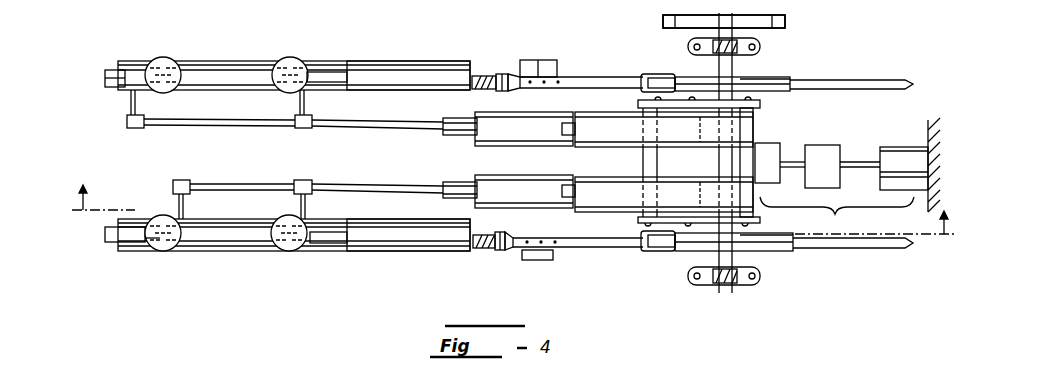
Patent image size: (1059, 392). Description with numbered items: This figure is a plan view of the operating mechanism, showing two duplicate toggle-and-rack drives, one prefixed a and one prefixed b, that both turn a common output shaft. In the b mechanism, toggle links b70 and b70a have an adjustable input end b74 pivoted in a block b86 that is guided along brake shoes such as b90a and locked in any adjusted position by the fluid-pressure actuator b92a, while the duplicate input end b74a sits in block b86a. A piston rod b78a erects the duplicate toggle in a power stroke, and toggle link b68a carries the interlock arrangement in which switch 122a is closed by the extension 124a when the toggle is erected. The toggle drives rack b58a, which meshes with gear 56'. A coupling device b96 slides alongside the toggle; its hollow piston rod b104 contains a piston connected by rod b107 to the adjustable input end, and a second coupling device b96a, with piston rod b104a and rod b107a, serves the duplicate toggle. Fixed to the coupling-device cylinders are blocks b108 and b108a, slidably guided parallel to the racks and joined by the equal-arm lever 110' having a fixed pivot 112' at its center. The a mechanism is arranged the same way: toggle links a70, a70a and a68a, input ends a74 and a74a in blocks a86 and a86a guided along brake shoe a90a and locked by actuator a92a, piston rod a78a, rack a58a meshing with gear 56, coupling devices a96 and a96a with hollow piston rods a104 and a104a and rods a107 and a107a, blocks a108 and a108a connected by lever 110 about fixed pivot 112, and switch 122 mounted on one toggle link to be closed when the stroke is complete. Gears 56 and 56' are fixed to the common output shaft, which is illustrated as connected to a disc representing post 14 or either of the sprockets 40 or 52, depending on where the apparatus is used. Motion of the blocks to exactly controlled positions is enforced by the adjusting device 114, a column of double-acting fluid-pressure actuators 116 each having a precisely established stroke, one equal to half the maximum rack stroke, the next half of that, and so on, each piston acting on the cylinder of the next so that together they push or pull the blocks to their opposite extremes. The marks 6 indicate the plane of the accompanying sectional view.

The toggle link b70 is at (222, 93).
The brake shoe b90a is at (109, 72).
The block b86 is at (112, 88).
The fluid-pressure actuator b92a is at (287, 57).
The block b86a is at (305, 60).
The toggle link b70a is at (451, 62).
The input end of toggle b74 is at (129, 113).
The input end of toggle b74a is at (307, 111).
The rod b107 is at (245, 127).
The rod b107a is at (377, 129).
The piston rod b78a is at (484, 76).
The toggle link b68a is at (600, 46).
The extension of link 124a is at (532, 60).
The switch 122a is at (545, 60).
The coupling device b96a is at (596, 107).
The rack b58a is at (887, 80).
The gear 56' is at (773, 64).
The post 14 is at (786, 22).
The sprocket 40 is at (724, 21).
The sprocket 52 is at (724, 21).
The equal-arm lever 110' is at (718, 153).
The equal-arm lever 110 is at (706, 259).
The block b108a is at (754, 126).
The block a108a is at (760, 221).
The piston rod b104 is at (481, 146).
The coupling device b96 is at (502, 110).
The piston rod b104a is at (566, 147).
The block b108 is at (640, 127).
The fixed pivot 112' is at (685, 129).
The piston rod a104 is at (475, 190).
The coupling device a96 is at (512, 213).
The piston rod a104a is at (566, 209).
The block a108 is at (664, 183).
The fixed pivot 112 is at (693, 194).
The double-acting fluid-pressure actuators 116 is at (785, 148).
The adjusting device 114 is at (837, 215).
The toggle link a70 is at (233, 250).
The brake shoe a90a is at (112, 236).
The fluid-pressure actuator a92a is at (287, 252).
The block a86 is at (193, 226).
The block a86a is at (316, 252).
The toggle link a70a is at (391, 253).
The input end of toggle a74 is at (177, 208).
The input end of toggle a74a is at (307, 205).
The rod a107 is at (274, 185).
The rod a107a is at (382, 194).
The piston rod a78a is at (478, 250).
The toggle link a68a is at (541, 259).
The switch 122 is at (530, 263).
The coupling device a96a is at (604, 218).
The rack a58a is at (882, 251).
The gear 56 is at (771, 256).
The section line 6- 6 is at (513, 200).